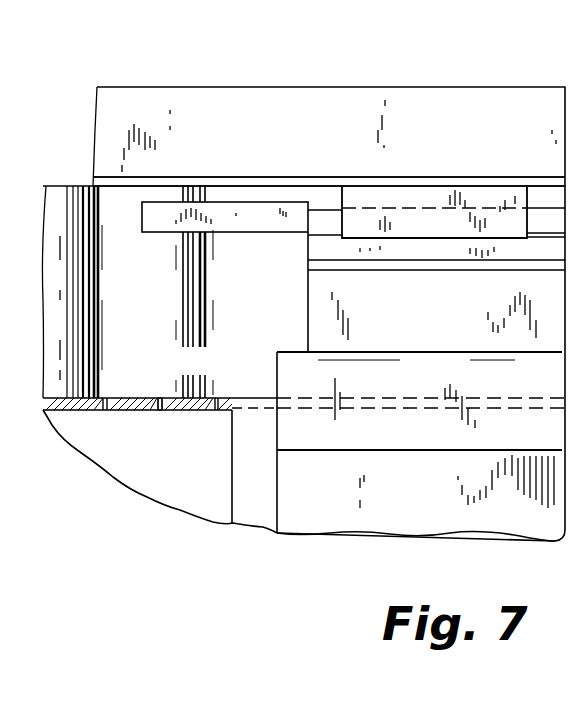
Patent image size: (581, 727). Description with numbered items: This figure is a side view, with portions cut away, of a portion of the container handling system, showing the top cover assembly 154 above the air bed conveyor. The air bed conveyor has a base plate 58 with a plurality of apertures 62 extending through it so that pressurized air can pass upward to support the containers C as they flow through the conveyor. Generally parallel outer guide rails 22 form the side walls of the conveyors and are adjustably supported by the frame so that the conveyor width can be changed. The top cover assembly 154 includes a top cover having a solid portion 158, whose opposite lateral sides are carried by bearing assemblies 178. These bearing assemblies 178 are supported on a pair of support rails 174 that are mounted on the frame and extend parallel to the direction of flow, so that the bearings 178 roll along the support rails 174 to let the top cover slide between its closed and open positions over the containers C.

The top cover assembly 154 is at (188, 73).
The solid portion 158 is at (212, 176).
The bearing assemblies 178 is at (545, 223).
The outer guide rails 22 is at (280, 220).
The support rails 174 is at (427, 318).
The base plate 58 is at (140, 410).
The apertures 62 is at (163, 412).
The containers C is at (166, 296).